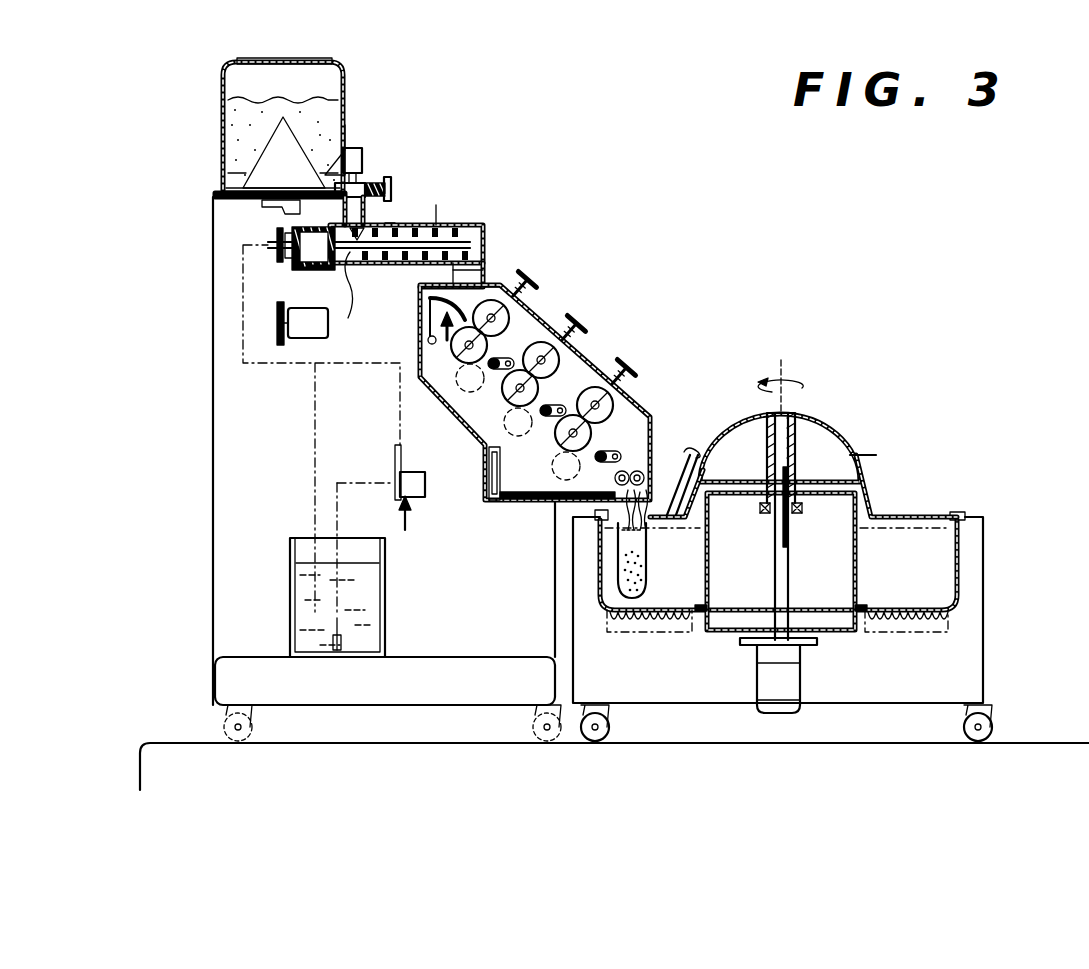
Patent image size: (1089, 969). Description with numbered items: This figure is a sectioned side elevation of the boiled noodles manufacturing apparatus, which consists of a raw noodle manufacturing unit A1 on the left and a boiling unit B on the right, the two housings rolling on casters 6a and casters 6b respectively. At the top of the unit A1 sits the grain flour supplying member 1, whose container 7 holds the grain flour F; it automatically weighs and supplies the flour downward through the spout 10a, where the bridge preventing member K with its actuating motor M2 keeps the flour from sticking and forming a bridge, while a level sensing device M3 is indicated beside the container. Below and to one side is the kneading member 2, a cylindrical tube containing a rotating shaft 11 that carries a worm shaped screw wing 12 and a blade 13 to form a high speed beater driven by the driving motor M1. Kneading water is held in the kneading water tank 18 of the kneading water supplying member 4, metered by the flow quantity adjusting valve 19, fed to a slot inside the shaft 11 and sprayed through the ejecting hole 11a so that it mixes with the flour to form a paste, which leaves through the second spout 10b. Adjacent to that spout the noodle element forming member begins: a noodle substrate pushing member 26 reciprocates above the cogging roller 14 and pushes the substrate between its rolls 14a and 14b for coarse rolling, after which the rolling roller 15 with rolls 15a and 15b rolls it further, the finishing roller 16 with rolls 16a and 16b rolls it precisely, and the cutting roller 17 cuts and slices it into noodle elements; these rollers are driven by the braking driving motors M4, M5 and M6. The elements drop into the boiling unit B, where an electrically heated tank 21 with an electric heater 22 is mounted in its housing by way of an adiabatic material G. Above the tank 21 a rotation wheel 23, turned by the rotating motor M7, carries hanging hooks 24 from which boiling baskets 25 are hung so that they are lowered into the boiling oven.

The grain flour supplying member 1 is at (347, 75).
The kneading member 2 is at (450, 216).
The kneading water supplying member 4 is at (405, 530).
The casters 6a is at (228, 728).
The casters 6b is at (972, 742).
The container 7 is at (228, 72).
The flour in hopper F is at (240, 122).
The bridge preventing member K is at (380, 157).
The driving motor M1 is at (305, 340).
The actuating motor M2 is at (368, 165).
The level sensor M3 is at (278, 206).
The driving motor M4 is at (470, 392).
The driving motor M5 is at (517, 436).
The driving motor M6 is at (566, 480).
The rotating motor M7 is at (778, 713).
The spout 10a is at (387, 227).
The second spout 10b is at (490, 245).
The rotating shaft 11 is at (483, 238).
The ejecting hole 11a is at (420, 213).
The screw wing 12 is at (348, 318).
The blade 13 is at (408, 238).
The cogging roller 14 is at (532, 280).
The roll 14a is at (512, 312).
The roll 14b is at (498, 341).
The rolling roller 15 is at (590, 335).
The roll 15a is at (560, 356).
The roll 15b is at (548, 384).
The finishing roller 16 is at (600, 432).
The roll 16a is at (613, 400).
The roll 16b is at (590, 448).
The cutting roller 17 is at (612, 480).
The kneading water tank 18 is at (292, 582).
The flow quantity adjusting valve 19 is at (395, 490).
The tank 21 is at (945, 563).
The electric heater 22 is at (918, 625).
The rotation wheel 23 is at (862, 478).
The hanging hooks 24 is at (700, 452).
The boiling baskets 25 is at (648, 600).
The noodle substrate pushing member 26 is at (445, 345).
The raw noodle manufacturing unit A1 is at (200, 460).
The boiling unit B is at (992, 530).
The adiabatic material G is at (975, 629).